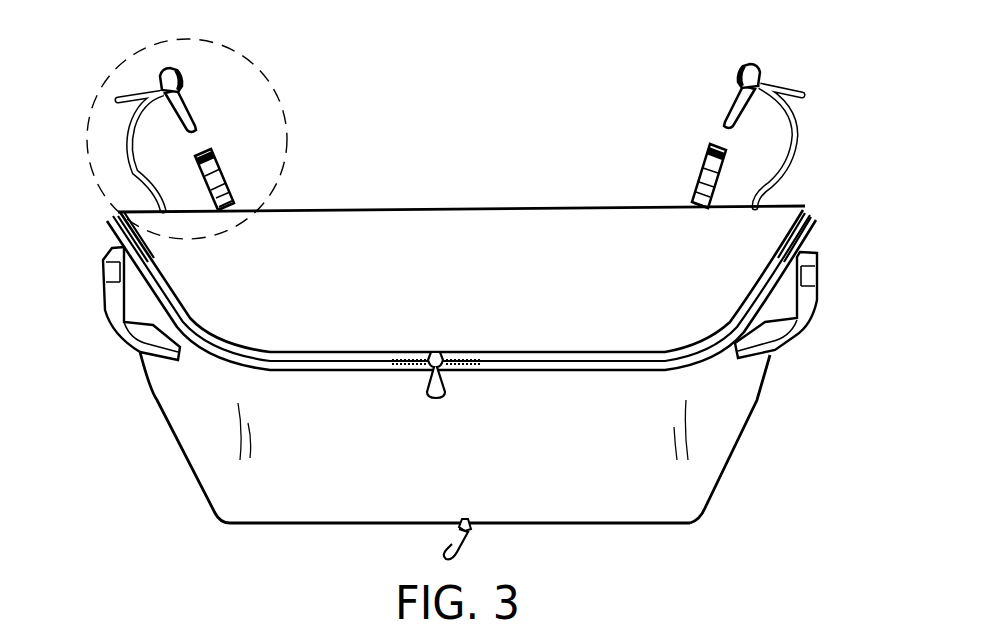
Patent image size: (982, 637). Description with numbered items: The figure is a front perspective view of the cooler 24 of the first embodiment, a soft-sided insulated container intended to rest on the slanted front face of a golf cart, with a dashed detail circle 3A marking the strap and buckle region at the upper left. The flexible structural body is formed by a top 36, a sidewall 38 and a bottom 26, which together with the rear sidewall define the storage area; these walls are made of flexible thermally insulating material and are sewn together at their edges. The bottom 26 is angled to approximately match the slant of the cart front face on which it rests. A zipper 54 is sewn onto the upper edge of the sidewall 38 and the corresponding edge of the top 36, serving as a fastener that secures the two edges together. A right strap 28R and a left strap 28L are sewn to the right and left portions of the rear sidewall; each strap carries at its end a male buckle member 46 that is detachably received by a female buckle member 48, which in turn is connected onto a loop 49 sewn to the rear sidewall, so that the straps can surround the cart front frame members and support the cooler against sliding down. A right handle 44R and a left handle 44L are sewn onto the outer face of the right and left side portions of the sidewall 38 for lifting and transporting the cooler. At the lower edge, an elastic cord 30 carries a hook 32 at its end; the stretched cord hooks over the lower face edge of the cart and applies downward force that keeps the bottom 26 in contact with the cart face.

The detail view circle FIG. 3A is at (212, 42).
The cooler 24 is at (178, 476).
The bottom 26 is at (298, 526).
The left strap 28L is at (145, 92).
The right strap 28R is at (773, 90).
The elastic cord 30 is at (463, 519).
The hook 32 is at (444, 547).
The top 36 is at (412, 242).
The sidewall 38 is at (622, 503).
The left handle 44L is at (115, 340).
The right handle 44R is at (790, 345).
The male buckle member 46 is at (190, 108).
The female buckle member 48 is at (235, 168).
The loop 49 is at (235, 206).
The zipper 54 is at (440, 356).